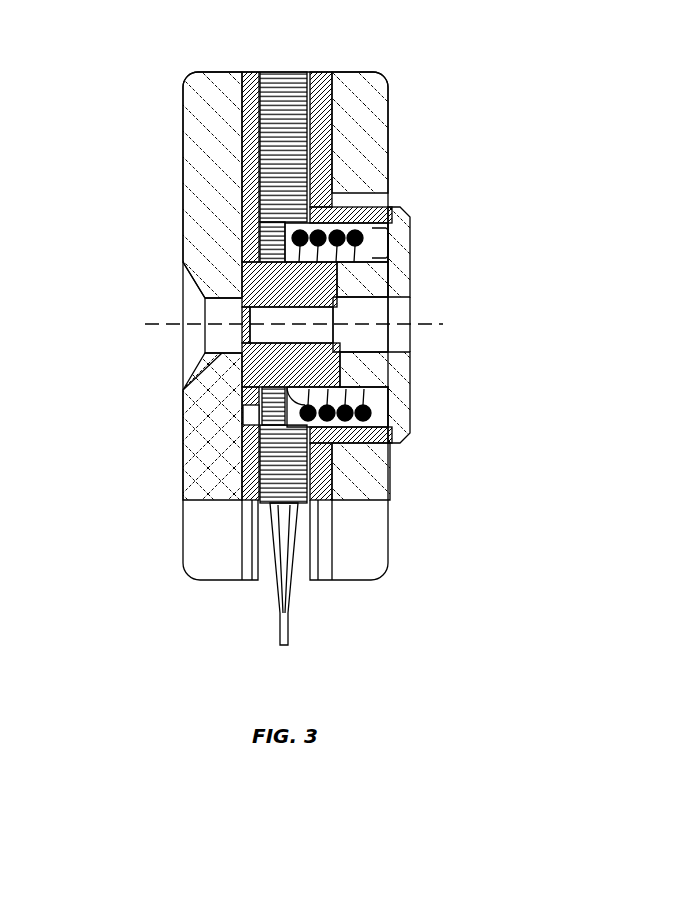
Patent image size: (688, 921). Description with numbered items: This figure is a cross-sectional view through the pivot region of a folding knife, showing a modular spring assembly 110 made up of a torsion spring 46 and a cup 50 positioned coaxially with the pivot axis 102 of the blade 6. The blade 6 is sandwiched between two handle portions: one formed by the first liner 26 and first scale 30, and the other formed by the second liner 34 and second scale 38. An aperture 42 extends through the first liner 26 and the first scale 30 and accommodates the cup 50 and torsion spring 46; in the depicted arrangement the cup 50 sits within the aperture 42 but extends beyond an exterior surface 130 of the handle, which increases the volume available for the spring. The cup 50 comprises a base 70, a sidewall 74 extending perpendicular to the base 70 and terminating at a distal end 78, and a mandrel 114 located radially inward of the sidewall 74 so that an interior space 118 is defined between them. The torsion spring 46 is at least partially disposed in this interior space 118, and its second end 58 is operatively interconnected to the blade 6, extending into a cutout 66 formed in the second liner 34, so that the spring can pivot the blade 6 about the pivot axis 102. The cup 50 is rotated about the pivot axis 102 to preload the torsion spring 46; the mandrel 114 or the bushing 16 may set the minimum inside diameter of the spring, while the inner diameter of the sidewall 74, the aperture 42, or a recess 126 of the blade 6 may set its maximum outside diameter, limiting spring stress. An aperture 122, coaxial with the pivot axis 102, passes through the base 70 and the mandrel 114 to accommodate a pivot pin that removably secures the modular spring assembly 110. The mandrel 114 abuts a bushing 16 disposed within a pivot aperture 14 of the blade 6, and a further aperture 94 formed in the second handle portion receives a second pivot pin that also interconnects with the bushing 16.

The blade 6 is at (290, 72).
The pivot aperture 14 is at (277, 262).
The bushing 16 is at (288, 283).
The first liner 26 is at (322, 72).
The first scale 30 is at (387, 73).
The second liner 34 is at (250, 72).
The second scale 38 is at (187, 72).
The aperture 42 is at (360, 445).
The torsion spring 46 is at (373, 402).
The cup 50 is at (412, 418).
The second end 58 is at (243, 408).
The cutout 66 is at (250, 428).
The base 70 is at (400, 240).
The sidewall 74 is at (350, 212).
The distal end 78 is at (310, 213).
The aperture 94 is at (223, 353).
The pivot axis 102 is at (153, 323).
The modular spring assembly 110 is at (503, 185).
The mandrel 114 is at (360, 277).
The interior space 118 is at (374, 238).
The aperture 122 is at (370, 352).
The recess 126 is at (297, 225).
The exterior surface 130 is at (390, 117).